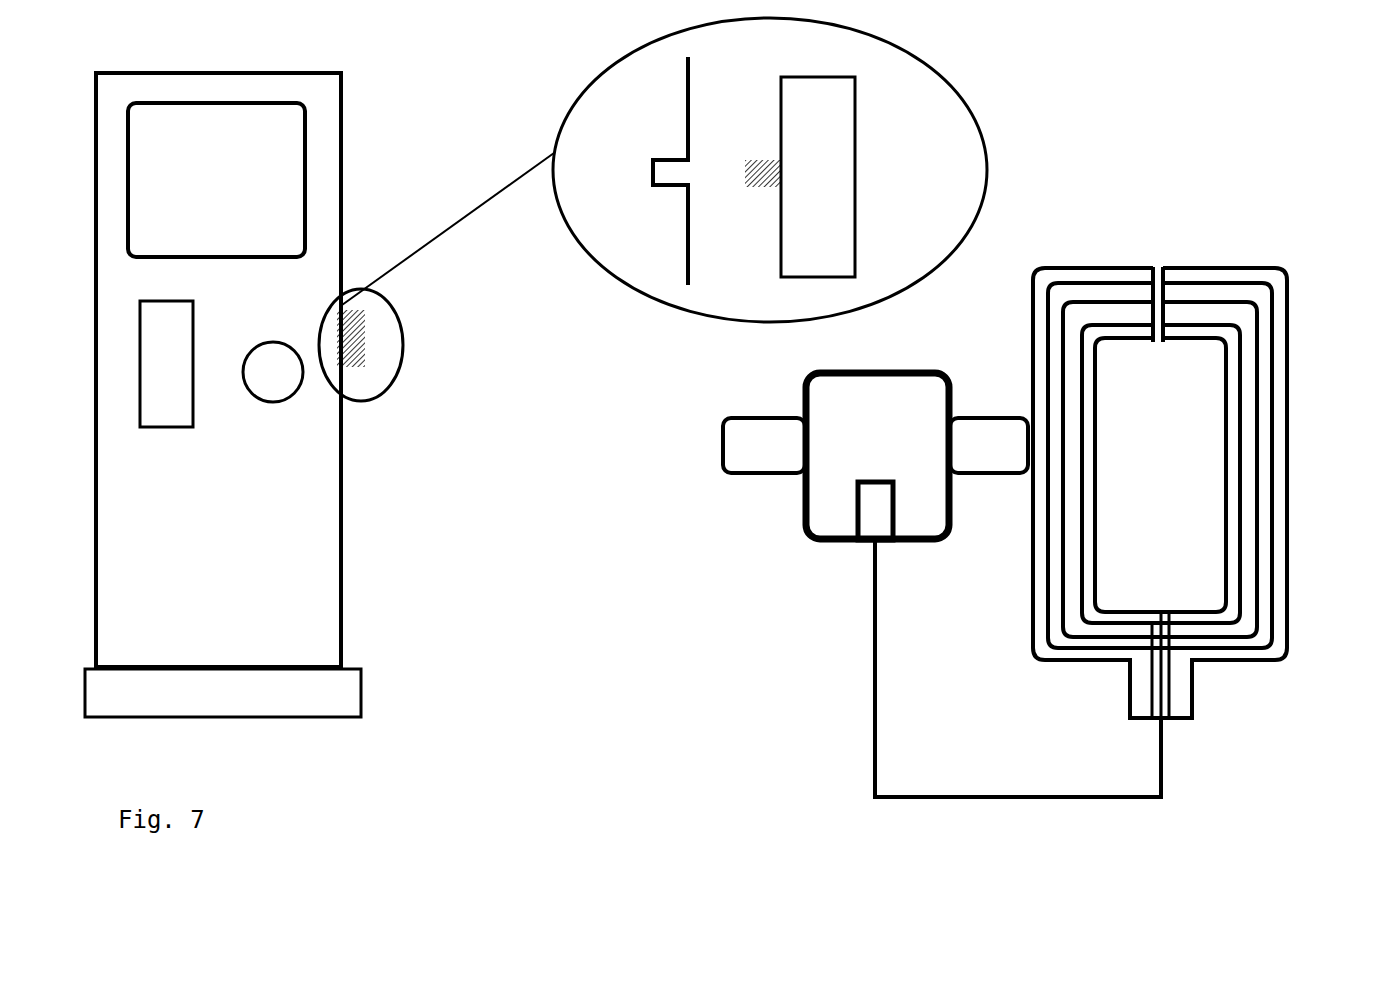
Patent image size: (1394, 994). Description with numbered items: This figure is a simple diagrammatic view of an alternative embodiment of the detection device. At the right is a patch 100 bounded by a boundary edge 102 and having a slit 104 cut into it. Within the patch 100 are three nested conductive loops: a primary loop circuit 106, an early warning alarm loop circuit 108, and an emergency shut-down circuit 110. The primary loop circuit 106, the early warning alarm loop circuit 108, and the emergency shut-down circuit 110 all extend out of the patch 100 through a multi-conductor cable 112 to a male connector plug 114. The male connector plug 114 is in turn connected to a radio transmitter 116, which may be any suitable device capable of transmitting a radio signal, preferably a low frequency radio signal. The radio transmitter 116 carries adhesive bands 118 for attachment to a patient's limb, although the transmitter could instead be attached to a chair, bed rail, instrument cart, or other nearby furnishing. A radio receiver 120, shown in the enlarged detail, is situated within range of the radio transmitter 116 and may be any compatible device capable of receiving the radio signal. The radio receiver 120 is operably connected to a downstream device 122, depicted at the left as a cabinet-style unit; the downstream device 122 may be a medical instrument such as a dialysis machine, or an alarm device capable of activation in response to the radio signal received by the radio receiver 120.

The patch 100 is at (1242, 697).
The boundary edge 102 is at (1212, 453).
The slit 104 is at (1155, 262).
The primary loop circuit 106 is at (1270, 282).
The early warning alarm loop circuit 108 is at (1255, 318).
The emergency shut-down circuit 110 is at (1245, 380).
The multi-conductor cable 112 is at (1033, 820).
The male connector plug 114 is at (914, 501).
The radio transmitter 116 is at (880, 360).
The adhesive bands 118 is at (716, 443).
The radio receiver 120 is at (1000, 160).
The downstream device 122 is at (362, 148).